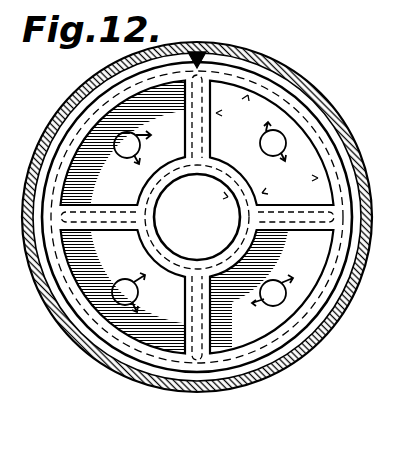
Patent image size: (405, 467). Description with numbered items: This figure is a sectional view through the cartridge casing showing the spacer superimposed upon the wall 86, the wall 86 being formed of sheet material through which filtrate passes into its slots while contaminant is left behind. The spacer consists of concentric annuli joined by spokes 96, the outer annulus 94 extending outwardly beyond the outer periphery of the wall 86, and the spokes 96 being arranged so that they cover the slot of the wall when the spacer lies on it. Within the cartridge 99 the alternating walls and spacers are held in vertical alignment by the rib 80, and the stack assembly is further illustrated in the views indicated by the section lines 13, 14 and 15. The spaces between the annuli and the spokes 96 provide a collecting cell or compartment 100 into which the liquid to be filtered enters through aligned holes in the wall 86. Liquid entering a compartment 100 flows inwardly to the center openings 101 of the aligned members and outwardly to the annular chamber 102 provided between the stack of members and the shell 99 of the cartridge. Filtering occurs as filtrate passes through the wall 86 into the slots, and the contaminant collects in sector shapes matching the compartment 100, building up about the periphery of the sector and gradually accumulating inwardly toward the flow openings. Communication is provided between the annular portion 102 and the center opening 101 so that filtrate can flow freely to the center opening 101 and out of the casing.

The stack assembly section line 13 is at (352, 88).
The stack assembly section line 14 is at (198, 35).
The filtrate passage section line 15 is at (95, 204).
The rib 80 is at (236, 46).
The wall 86 is at (254, 330).
The outer annulus 94 is at (277, 92).
The spokes 96 is at (220, 158).
The cartridge shell 99 is at (346, 128).
The collecting cell or compartment 100 is at (310, 288).
The center opening 101 is at (364, 262).
The annular chamber 102 is at (358, 272).